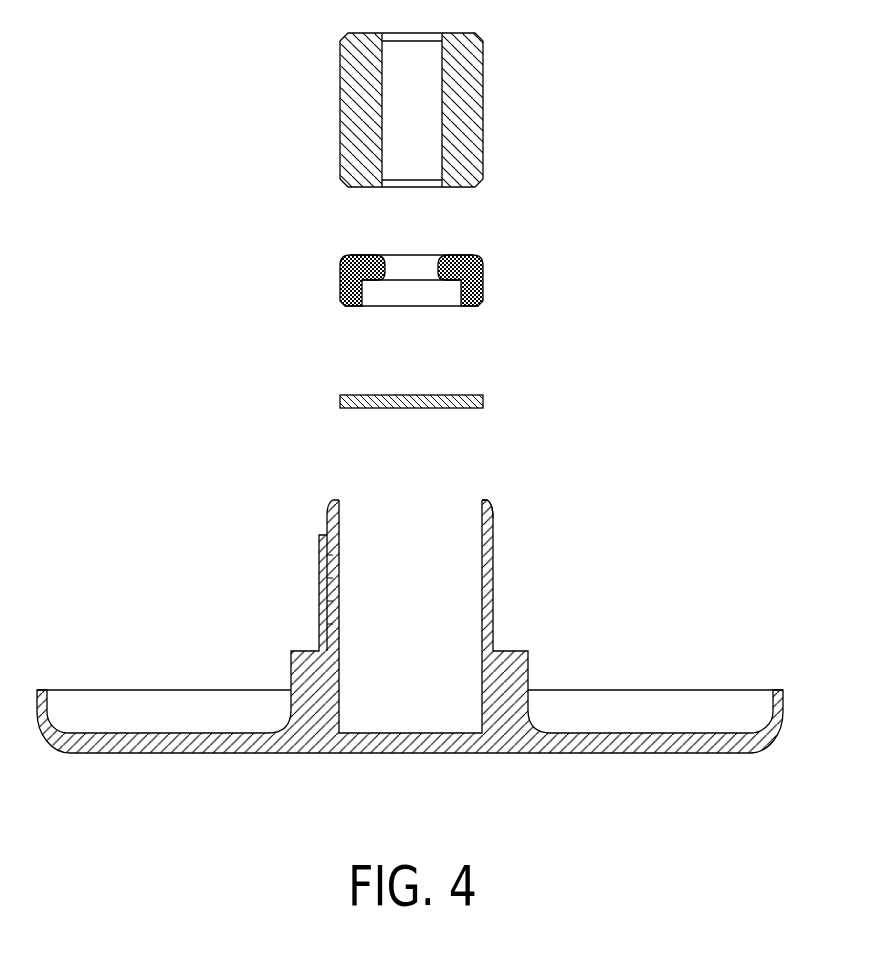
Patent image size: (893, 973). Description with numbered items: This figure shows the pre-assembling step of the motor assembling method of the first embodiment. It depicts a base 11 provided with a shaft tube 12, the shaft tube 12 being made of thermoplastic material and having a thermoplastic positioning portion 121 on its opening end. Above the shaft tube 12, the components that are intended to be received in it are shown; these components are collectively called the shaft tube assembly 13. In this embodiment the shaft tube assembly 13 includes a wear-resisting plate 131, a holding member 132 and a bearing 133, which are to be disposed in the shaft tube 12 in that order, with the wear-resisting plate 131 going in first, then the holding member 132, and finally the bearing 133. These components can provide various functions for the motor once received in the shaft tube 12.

The base 11 is at (702, 740).
The shaft tube 12 is at (492, 602).
The thermoplastic positioning portion 121 is at (488, 512).
The shaft tube assembly 13 is at (523, 220).
The wear-resisting plate 131 is at (477, 346).
The holding member 132 is at (475, 254).
The bearing 133 is at (468, 142).